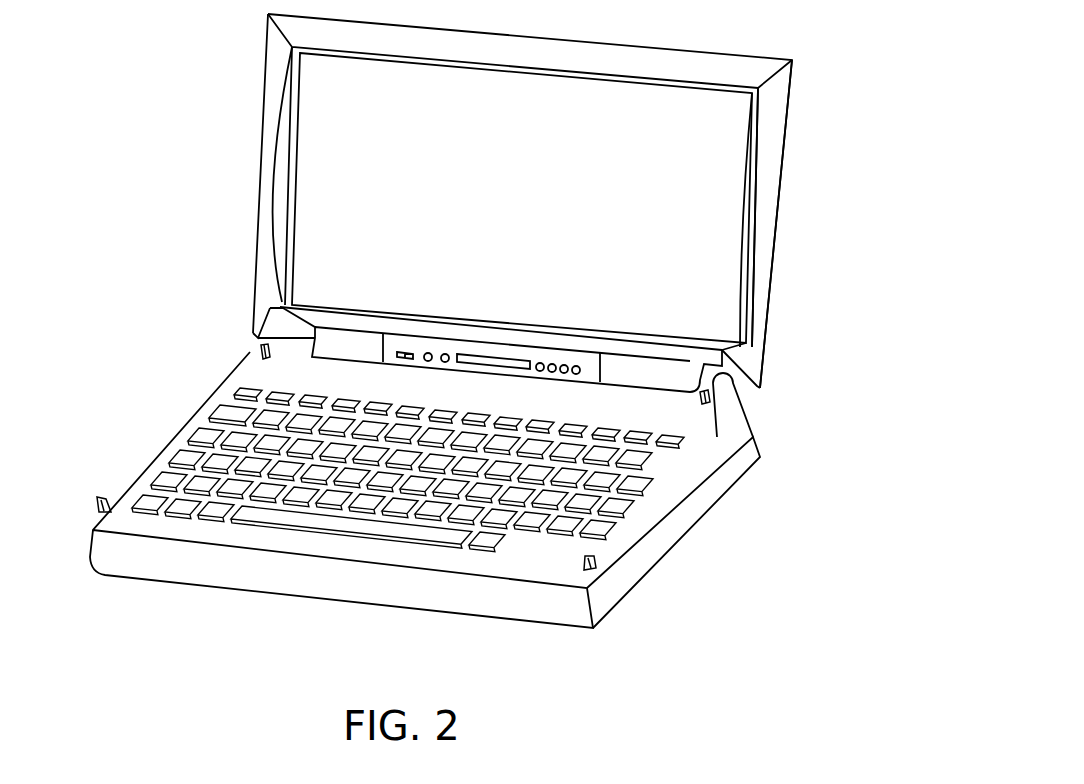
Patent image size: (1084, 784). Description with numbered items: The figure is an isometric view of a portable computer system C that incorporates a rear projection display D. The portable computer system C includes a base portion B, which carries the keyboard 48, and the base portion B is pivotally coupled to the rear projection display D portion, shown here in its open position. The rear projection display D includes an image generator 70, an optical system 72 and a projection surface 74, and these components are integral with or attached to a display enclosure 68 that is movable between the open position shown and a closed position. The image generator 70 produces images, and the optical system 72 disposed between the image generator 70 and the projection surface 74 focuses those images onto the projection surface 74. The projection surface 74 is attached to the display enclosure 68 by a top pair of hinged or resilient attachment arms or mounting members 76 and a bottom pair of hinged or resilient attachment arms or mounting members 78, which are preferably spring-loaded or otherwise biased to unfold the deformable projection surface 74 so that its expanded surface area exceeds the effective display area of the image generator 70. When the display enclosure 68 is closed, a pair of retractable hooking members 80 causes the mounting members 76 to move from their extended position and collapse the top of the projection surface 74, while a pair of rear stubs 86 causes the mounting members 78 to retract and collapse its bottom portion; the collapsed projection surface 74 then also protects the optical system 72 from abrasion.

The keyboard 48 is at (208, 433).
The display enclosure 68 is at (750, 312).
The image generator 70 is at (735, 222).
The optical system 72 is at (277, 143).
The projection surface 74 is at (777, 133).
The top pair of attachment arms or mounting members 76 is at (773, 73).
The bottom pair of attachment arms or mounting members 78 is at (747, 370).
The retractable hooking members 80 is at (598, 565).
The rear stubs 86 is at (707, 395).
The base portion B is at (680, 502).
The portable computer system C is at (135, 288).
The rear projection display D is at (860, 58).